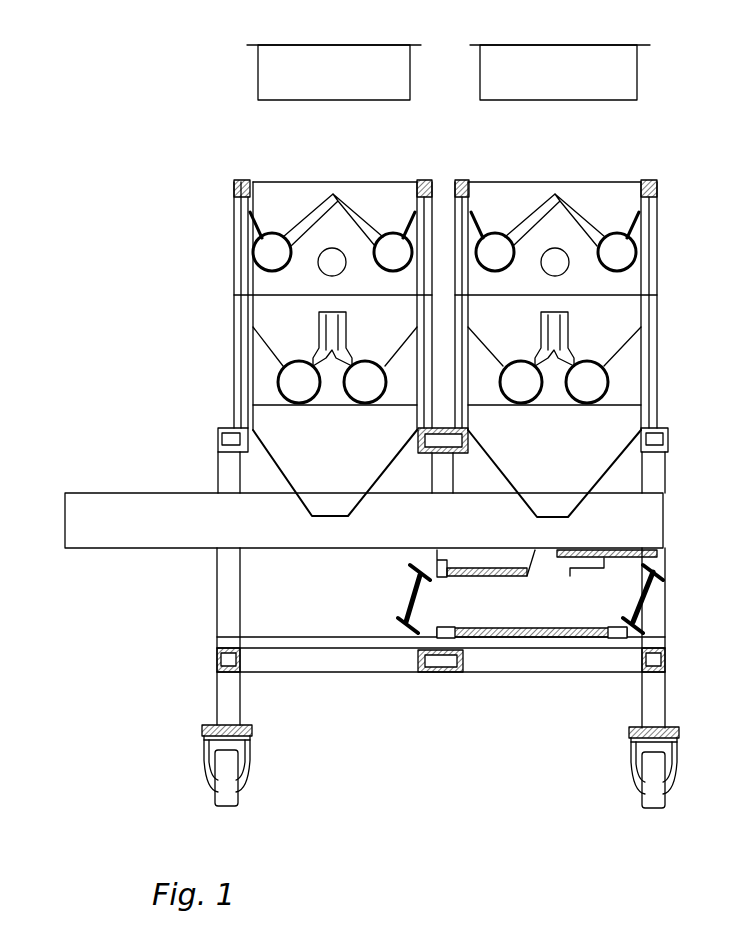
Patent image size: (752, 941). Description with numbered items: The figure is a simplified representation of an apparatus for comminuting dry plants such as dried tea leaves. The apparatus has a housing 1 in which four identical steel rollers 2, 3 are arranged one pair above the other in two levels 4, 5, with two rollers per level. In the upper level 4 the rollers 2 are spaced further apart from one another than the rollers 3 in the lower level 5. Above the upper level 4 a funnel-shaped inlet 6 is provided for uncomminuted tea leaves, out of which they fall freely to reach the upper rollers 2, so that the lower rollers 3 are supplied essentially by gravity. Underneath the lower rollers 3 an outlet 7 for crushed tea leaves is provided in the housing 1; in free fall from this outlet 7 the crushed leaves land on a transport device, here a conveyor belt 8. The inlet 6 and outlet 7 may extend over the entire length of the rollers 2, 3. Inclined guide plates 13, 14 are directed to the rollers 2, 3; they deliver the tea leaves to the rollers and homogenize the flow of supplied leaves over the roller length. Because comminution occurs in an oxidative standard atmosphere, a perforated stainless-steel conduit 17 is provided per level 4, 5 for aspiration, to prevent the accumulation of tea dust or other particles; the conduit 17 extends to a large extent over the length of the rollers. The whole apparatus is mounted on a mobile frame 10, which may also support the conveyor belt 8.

The housing 1 is at (205, 332).
The upper rollers 2 is at (444, 252).
The lower rollers 3 is at (443, 382).
The upper level 4 is at (366, 291).
The lower level 5 is at (381, 340).
The funnel-shaped inlet 6 is at (411, 72).
The outlet 7 is at (336, 489).
The conveyor belt 8 is at (380, 553).
The mobile frame 10 is at (352, 680).
The guide plate 13 is at (265, 213).
The guide plate 14 is at (264, 335).
The perforated conduit 17 is at (320, 270).